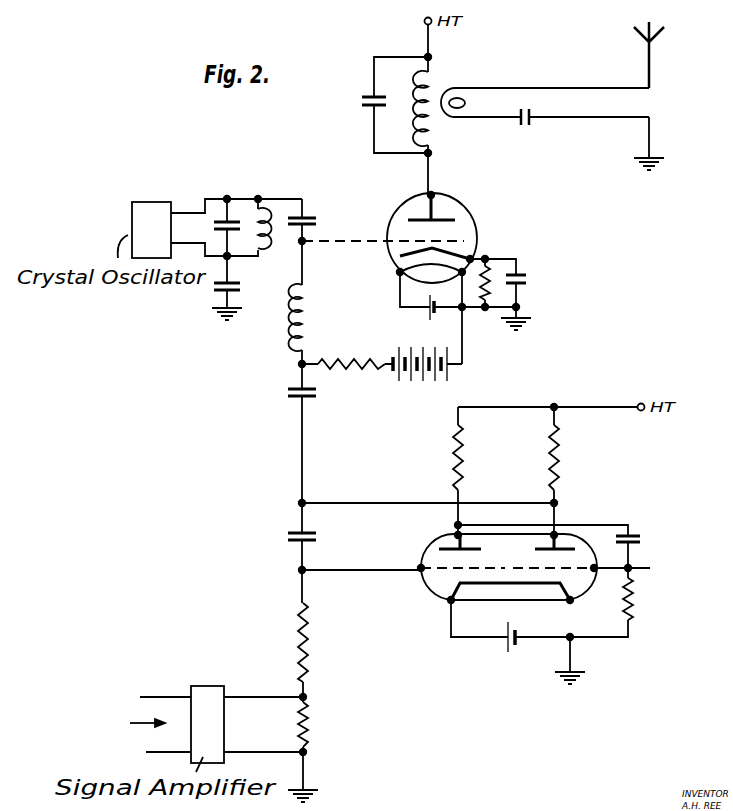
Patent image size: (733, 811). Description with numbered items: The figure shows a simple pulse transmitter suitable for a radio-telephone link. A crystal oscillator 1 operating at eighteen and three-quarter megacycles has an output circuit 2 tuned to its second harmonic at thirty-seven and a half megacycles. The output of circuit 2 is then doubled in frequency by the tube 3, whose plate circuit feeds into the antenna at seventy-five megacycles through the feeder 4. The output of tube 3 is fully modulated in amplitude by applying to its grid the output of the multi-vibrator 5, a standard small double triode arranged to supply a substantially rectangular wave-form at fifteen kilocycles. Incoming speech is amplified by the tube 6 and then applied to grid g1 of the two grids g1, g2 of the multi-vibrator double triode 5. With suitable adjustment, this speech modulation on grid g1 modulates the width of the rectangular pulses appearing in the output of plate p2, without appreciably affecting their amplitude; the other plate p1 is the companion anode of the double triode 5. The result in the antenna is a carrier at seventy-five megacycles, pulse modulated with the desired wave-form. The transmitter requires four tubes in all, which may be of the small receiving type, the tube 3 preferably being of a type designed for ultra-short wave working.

The crystal oscillator 1 is at (151, 230).
The output circuit 2 is at (246, 220).
The tube 3 is at (472, 224).
The aerial feeder 4 is at (642, 101).
The multi-vibrator double triode 5 is at (575, 586).
The tube 6 is at (207, 724).
The first anode p1 is at (437, 553).
The plate p2 is at (562, 552).
The grid g1 is at (455, 570).
The grid g2 is at (595, 571).